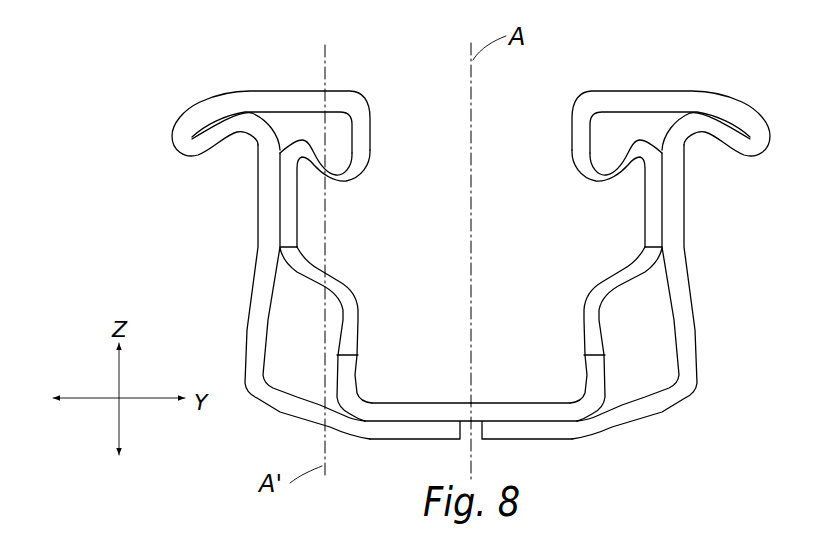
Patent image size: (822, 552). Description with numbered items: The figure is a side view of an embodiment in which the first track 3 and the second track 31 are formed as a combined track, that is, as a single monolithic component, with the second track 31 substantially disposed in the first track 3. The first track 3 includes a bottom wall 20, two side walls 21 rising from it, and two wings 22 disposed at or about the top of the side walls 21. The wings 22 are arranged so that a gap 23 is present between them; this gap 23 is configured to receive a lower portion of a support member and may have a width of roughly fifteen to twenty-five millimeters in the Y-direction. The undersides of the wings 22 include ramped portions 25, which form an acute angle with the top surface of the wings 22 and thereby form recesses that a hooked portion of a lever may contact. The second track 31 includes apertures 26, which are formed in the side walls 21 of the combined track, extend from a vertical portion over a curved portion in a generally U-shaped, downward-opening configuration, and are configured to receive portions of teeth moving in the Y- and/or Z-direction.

The first track 3 is at (416, 262).
The second track 31 is at (471, 262).
The bottom wall 20 is at (522, 430).
The side walls 21 is at (268, 256).
The wings 22 is at (283, 105).
The gap 23 is at (527, 118).
The ramped portions 25 is at (313, 177).
The apertures 26 is at (340, 290).